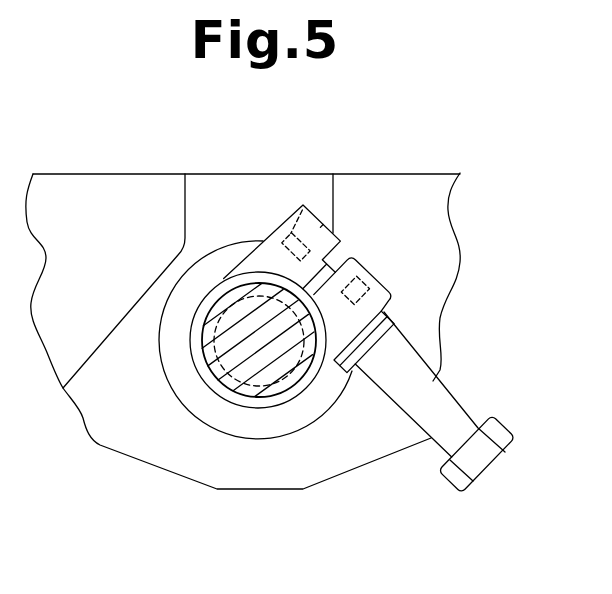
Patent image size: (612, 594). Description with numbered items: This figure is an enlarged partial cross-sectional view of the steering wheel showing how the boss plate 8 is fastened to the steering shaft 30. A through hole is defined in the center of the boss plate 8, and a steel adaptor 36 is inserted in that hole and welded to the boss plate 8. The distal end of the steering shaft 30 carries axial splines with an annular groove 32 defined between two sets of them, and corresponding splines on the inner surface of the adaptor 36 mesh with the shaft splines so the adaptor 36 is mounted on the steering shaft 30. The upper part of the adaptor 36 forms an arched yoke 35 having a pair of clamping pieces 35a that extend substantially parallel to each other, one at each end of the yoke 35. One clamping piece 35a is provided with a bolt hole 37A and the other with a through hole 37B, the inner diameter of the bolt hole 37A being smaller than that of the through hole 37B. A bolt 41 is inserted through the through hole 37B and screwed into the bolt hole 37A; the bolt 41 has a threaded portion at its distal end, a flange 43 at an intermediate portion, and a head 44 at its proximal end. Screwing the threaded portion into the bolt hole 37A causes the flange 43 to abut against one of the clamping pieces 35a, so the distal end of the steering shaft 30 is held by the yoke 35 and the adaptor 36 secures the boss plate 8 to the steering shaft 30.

The boss plate 8 is at (438, 357).
The steering shaft 30 is at (197, 370).
The annular groove 32 is at (213, 326).
The yoke 35 is at (284, 222).
The clamping pieces 35a is at (321, 225).
The adaptor 36 is at (209, 405).
The bolt hole 37A is at (303, 210).
The through hole 37B is at (366, 288).
The bolt 41 is at (413, 420).
The flange 43 is at (356, 360).
The head 44 is at (478, 477).